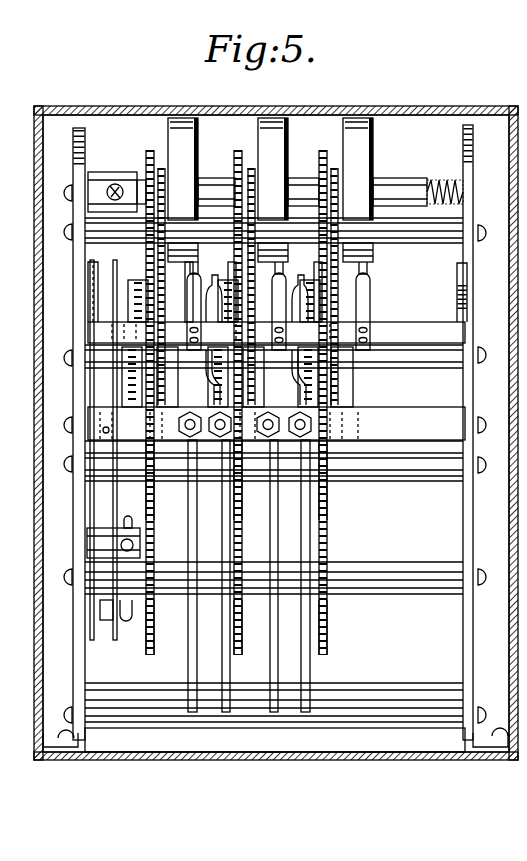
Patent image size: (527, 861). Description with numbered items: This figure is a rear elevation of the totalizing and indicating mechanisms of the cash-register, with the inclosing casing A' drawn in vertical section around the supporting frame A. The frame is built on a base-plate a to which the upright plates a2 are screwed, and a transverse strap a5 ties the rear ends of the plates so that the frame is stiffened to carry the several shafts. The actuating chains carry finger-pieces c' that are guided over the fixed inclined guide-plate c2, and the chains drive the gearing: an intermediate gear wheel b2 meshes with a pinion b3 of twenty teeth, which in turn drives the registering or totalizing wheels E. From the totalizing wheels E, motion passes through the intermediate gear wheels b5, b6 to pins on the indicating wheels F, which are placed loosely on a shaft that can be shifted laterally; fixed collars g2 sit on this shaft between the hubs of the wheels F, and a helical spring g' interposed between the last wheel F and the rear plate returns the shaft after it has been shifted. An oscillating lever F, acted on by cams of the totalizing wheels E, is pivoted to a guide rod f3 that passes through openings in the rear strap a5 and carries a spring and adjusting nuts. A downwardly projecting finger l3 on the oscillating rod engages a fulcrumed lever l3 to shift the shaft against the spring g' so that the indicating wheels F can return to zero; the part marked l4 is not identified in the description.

The supporting frame A is at (276, 433).
The casing A' is at (43, 437).
The base-plate a is at (275, 485).
The upright front plates a2 is at (275, 298).
The transverse strap a5 is at (276, 423).
The intermediate gear wheel b2 is at (250, 627).
The pinion b3 is at (247, 480).
The intermediate gear wheel b5 is at (235, 388).
The transmitting gear wheel b6 is at (251, 274).
The finger-pieces c' is at (289, 329).
The inclined guide-plate c2 is at (276, 332).
The registering or totalizing wheel E is at (360, 387).
The indicating wheel F is at (283, 413).
The guide rod f3 is at (318, 427).
The helical spring g' is at (275, 181).
The fixed collars g2 is at (282, 179).
The downwardly projecting finger l3 is at (113, 450).
The lever rod l4 is at (102, 634).